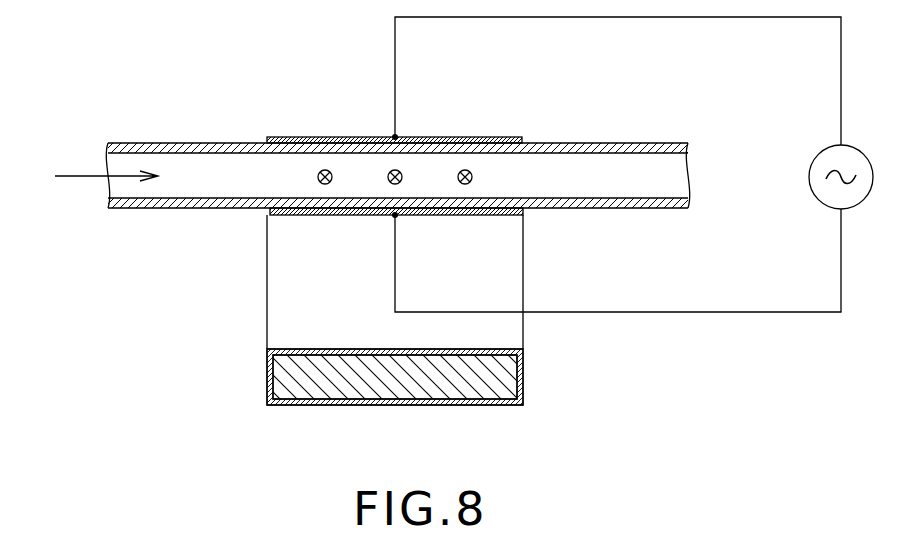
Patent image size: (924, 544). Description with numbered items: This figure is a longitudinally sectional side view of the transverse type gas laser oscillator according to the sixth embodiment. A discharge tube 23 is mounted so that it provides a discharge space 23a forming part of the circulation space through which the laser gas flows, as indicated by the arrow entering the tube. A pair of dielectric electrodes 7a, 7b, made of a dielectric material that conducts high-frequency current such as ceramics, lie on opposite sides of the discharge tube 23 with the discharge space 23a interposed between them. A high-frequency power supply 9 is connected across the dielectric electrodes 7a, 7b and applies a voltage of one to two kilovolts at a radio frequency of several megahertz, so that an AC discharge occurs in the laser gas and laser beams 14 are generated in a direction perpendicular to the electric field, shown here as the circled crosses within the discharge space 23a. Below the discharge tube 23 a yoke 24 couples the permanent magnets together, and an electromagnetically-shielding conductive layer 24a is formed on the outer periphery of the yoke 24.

The discharge tube 23 is at (203, 208).
The discharge space 23a is at (427, 170).
The laser beams 14 is at (467, 168).
The dielectric electrode 7a is at (326, 137).
The dielectric electrode 7b is at (324, 215).
The high-frequency power supply 9 is at (866, 158).
The yoke 24 is at (363, 385).
The electromagnetically-shielding conductive layer 24a is at (523, 370).